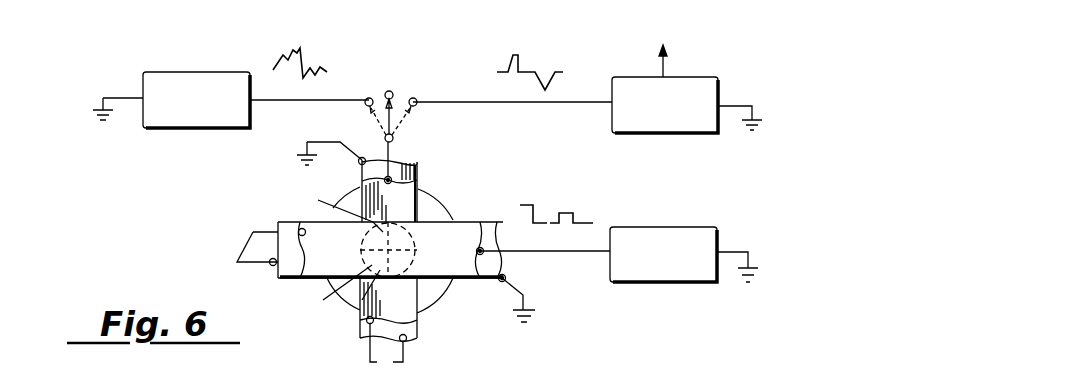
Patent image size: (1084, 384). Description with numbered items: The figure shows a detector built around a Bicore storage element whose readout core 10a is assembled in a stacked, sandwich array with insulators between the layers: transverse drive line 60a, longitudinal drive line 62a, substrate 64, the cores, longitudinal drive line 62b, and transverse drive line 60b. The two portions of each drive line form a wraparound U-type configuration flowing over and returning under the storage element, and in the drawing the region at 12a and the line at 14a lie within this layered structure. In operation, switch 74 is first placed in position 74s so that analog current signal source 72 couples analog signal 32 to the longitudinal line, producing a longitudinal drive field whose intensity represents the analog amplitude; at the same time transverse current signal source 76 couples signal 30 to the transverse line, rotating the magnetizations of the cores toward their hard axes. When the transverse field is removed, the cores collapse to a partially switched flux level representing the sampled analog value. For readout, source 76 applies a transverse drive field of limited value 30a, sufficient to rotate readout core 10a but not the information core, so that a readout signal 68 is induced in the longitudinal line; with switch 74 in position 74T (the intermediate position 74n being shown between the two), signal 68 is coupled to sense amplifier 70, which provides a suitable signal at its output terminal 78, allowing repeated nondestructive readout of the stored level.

The analog current signal source 72 is at (237, 72).
The analog signal 32 is at (300, 48).
The switch 74 is at (403, 82).
The switch position 74s is at (355, 93).
The probe terminal n 74n is at (391, 81).
The switch position 74T is at (428, 93).
The readout signal 68 is at (513, 56).
The output terminal 78 is at (660, 48).
The sense amplifier 70 is at (688, 77).
The longitudinal drive line 62a is at (407, 160).
The longitudinal drive line 62b is at (391, 180).
The readout core 10a is at (370, 233).
The circular magnetic domain region 12a is at (412, 245).
The lower magnetic element 14a is at (336, 290).
The transverse drive field signal 30 is at (525, 203).
The transverse drive field 30a is at (575, 210).
The transverse current signal source 76 is at (683, 227).
The transverse drive line 60a is at (503, 268).
The transverse drive line 60b is at (500, 281).
The substrate 64 is at (423, 305).